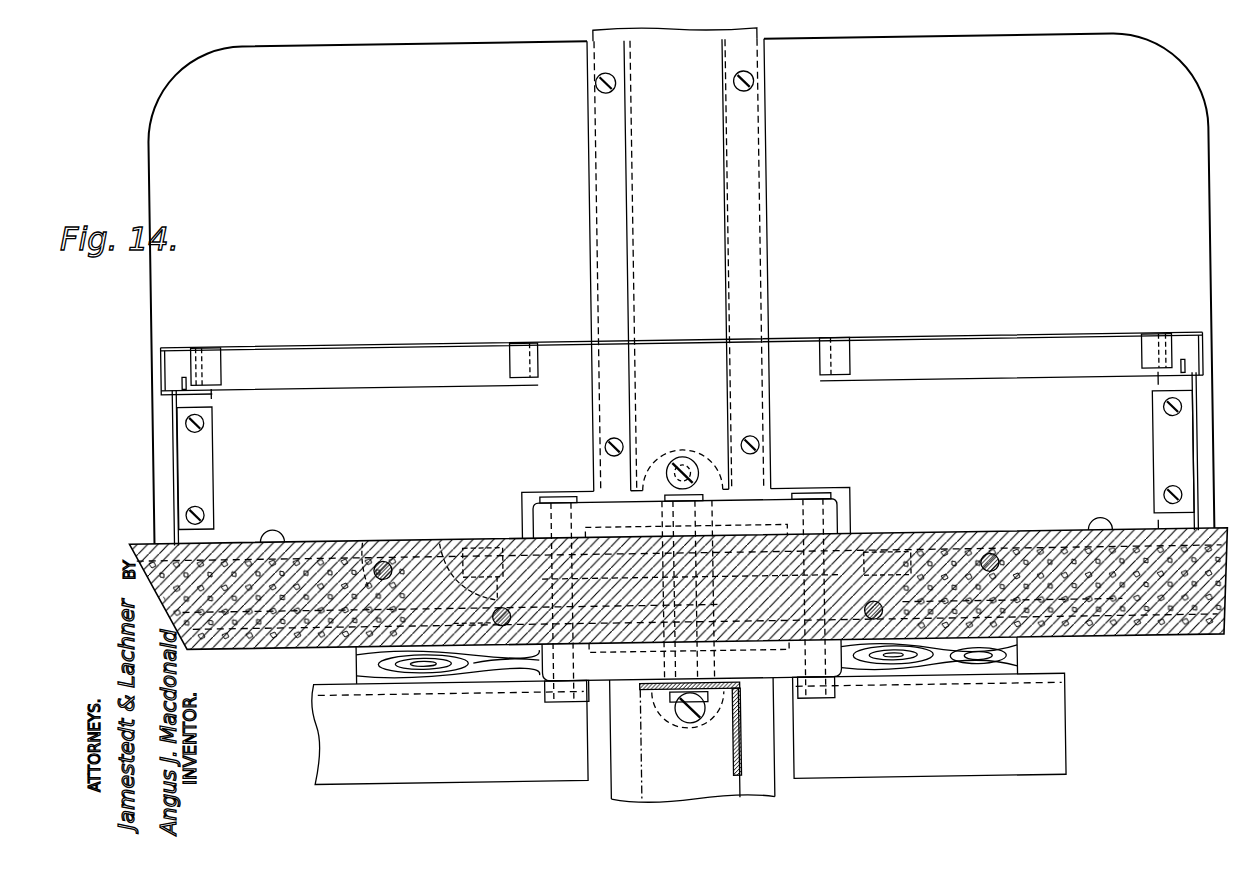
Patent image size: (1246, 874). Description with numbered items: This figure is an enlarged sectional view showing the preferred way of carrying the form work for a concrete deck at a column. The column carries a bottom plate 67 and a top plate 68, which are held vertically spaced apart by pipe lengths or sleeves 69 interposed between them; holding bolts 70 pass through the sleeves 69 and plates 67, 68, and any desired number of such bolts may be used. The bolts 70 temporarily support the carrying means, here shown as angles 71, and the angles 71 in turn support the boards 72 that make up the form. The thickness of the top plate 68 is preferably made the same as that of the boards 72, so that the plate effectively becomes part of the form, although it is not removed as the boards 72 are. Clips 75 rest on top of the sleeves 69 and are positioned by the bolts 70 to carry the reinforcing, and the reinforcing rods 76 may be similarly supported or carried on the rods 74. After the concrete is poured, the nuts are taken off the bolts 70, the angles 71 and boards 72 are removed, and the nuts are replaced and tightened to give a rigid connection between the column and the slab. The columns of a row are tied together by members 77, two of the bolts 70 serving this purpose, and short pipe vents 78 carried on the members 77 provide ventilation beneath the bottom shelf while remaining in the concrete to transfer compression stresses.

The bottom plate 67 is at (824, 522).
The top plate 68 is at (779, 667).
The sleeve 69 is at (889, 536).
The holding bolt 70 is at (558, 495).
The angle 71 is at (689, 729).
The board 72 is at (1004, 661).
The rod 74 is at (495, 540).
The clip 75 is at (453, 536).
The reinforcing rod 76 is at (361, 538).
The tie member 77 is at (654, 702).
The pipe vent 78 is at (1190, 460).